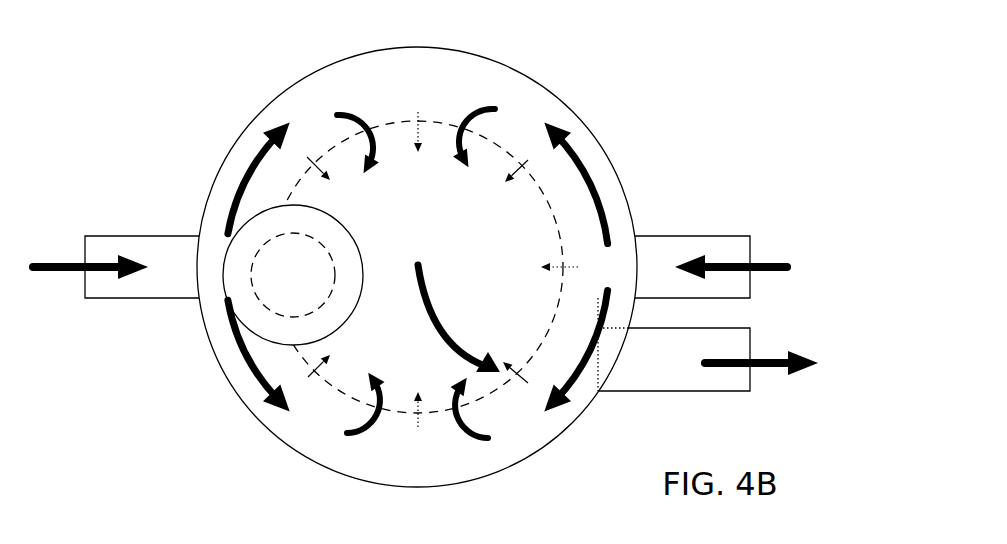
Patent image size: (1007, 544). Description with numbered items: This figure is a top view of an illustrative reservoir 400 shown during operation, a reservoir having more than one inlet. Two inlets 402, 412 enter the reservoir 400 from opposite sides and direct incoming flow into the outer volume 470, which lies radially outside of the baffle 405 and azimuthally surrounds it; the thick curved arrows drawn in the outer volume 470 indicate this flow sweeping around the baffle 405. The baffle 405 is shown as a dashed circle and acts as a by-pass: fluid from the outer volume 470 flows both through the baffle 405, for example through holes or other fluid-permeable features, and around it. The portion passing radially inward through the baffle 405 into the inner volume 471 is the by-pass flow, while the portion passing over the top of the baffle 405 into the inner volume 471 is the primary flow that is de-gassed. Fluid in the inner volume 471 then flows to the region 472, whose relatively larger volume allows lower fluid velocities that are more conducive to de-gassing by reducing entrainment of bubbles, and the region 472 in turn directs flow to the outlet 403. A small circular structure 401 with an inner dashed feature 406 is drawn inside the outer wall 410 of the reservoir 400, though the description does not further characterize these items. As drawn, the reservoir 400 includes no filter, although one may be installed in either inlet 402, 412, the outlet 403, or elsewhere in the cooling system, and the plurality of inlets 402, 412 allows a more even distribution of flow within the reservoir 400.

The reservoir 400 is at (425, 255).
The inner tube 401 is at (225, 293).
The inlet 402 is at (692, 236).
The outlet 403 is at (690, 392).
The baffle 405 is at (497, 143).
The inner passage 406 is at (263, 303).
The housing 410 is at (558, 88).
The inlet 412 is at (135, 236).
The outer volume 470 is at (463, 463).
The inner volume 471 is at (442, 268).
The region 472 is at (424, 344).